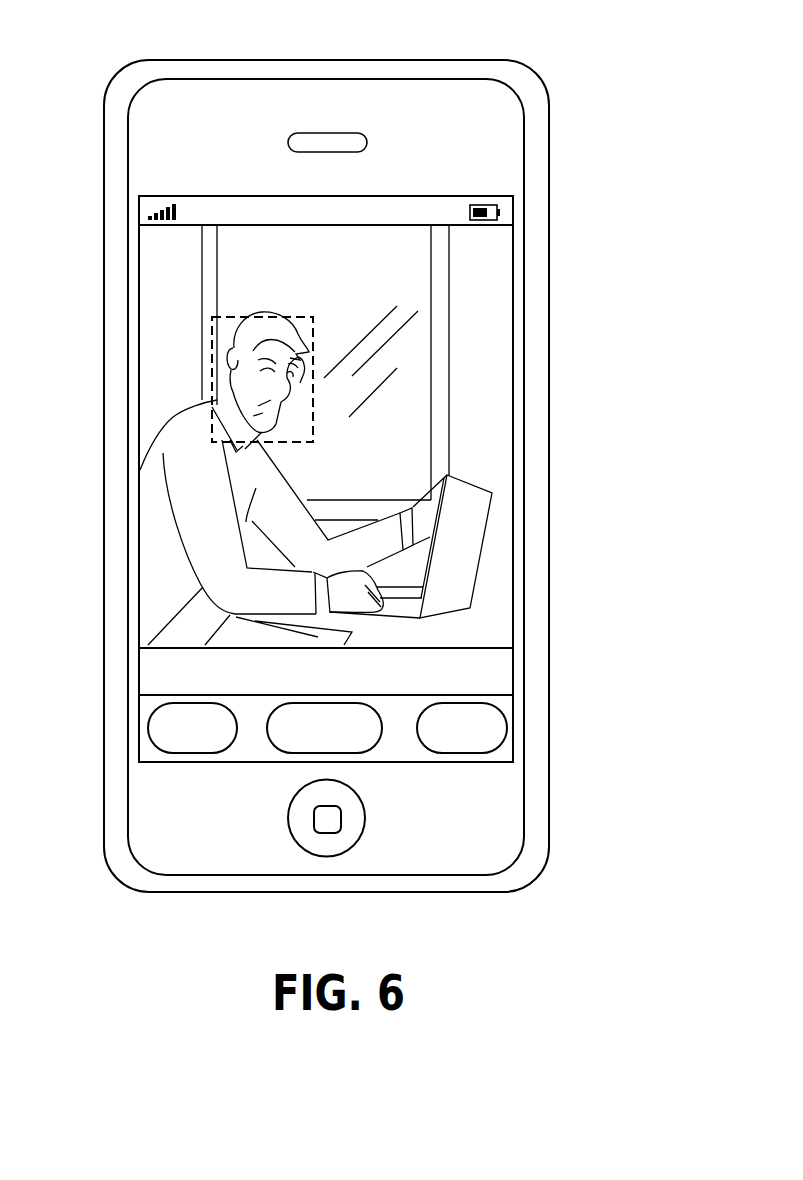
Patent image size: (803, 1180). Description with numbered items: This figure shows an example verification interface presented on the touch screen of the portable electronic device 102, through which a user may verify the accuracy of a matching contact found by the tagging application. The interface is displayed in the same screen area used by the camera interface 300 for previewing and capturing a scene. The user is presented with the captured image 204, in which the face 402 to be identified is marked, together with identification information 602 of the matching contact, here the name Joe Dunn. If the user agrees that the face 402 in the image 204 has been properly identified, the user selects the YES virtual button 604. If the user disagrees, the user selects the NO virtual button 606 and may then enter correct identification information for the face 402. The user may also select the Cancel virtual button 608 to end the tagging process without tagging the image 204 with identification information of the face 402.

The portable electronic device 102 is at (557, 107).
The camera interface 300 is at (160, 222).
The face 402 is at (305, 338).
The image 204 is at (334, 502).
The identification information 602 is at (358, 757).
The virtual button 604 is at (507, 728).
The virtual button 606 is at (150, 714).
The virtual button 608 is at (268, 722).